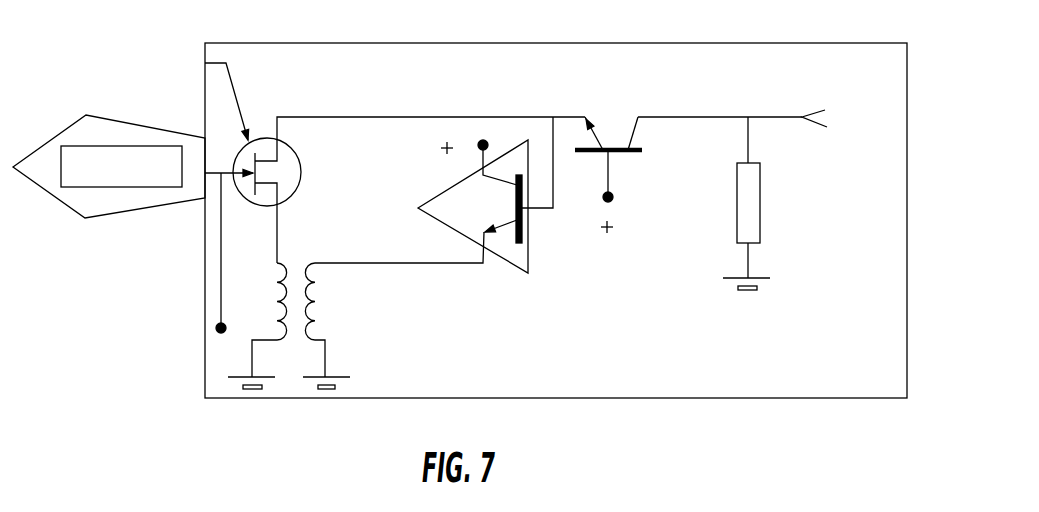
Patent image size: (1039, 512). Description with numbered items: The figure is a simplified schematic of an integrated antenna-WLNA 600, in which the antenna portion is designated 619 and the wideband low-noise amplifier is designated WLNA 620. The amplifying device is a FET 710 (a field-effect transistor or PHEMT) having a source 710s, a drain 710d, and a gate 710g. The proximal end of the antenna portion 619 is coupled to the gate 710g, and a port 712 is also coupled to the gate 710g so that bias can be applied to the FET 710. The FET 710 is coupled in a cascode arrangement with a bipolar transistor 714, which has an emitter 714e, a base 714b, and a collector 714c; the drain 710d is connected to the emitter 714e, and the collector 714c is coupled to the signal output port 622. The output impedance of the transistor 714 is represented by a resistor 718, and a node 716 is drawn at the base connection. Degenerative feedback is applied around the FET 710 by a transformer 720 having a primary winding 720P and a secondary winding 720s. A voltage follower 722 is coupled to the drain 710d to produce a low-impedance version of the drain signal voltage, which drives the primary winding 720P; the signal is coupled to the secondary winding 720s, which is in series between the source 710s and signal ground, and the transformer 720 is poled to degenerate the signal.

The integrated antenna-WLNA 600 is at (226, 449).
The antenna portion 619 is at (82, 218).
The WLNA 620 is at (192, 350).
The port 712 is at (221, 323).
The FET 710 is at (352, 157).
The gate electrode 710g is at (236, 187).
The drain electrode 710d is at (262, 139).
The source electrode 710s is at (281, 203).
The transformer 720 is at (280, 340).
The primary winding 720P is at (300, 327).
The secondary winding 720s is at (272, 315).
The voltage follower 722 is at (485, 254).
The bipolar transistor 714 is at (649, 124).
The emitter 714e is at (573, 117).
The collector 714c is at (650, 117).
The base 714b is at (606, 158).
The base bias node 716 is at (613, 200).
The resistor 718 is at (737, 225).
The signal output port 622 is at (822, 112).